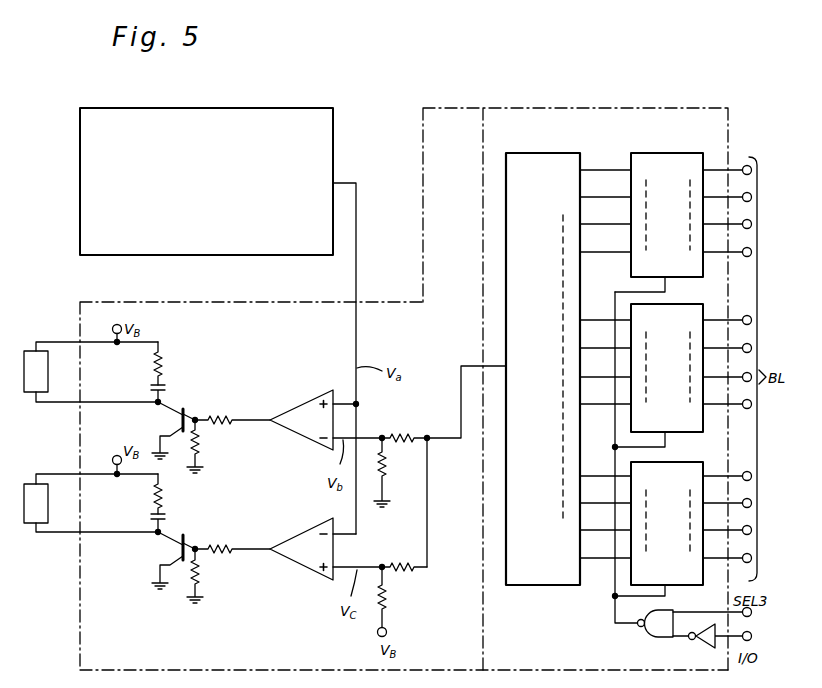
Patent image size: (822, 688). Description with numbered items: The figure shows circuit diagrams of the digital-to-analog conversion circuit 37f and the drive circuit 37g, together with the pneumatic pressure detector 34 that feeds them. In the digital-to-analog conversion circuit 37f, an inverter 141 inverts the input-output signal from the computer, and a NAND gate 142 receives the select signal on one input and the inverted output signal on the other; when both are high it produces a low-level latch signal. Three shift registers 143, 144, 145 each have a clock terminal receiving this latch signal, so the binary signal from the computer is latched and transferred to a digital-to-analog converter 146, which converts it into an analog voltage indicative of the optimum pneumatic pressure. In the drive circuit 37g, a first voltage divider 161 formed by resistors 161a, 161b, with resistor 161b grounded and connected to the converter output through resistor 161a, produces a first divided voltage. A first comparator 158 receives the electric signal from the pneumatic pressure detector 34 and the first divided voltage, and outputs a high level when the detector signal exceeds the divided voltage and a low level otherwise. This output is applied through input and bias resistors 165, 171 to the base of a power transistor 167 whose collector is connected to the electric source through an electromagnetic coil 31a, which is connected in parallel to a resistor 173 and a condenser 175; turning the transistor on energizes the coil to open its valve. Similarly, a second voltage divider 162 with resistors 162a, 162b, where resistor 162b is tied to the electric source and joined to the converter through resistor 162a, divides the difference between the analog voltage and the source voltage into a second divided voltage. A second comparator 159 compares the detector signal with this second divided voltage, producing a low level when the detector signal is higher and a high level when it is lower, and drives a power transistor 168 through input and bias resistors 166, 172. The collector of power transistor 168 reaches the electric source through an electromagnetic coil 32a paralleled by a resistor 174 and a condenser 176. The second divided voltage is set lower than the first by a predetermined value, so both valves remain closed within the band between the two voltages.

The pneumatic pressure detector 34 is at (232, 108).
The digital-to-analog conversion circuit 37f is at (610, 108).
The drive circuit 37g is at (233, 302).
The electromagnetic coil 31a is at (32, 394).
The electromagnetic coil 32a is at (32, 525).
The inverter 141 is at (700, 650).
The NAND gate 142 is at (637, 630).
The shift register 143 is at (665, 153).
The shift register 144 is at (665, 304).
The shift register 145 is at (665, 463).
The digital-to-analog converter 146 is at (545, 290).
The first comparator 158 is at (293, 432).
The second comparator 159 is at (302, 533).
The first voltage divider 161 is at (422, 443).
The resistor 161a is at (402, 433).
The resistor 161b is at (389, 470).
The second voltage divider 162 is at (411, 584).
The resistor 162a is at (408, 559).
The resistor 162b is at (389, 600).
The input resistor 165 is at (223, 405).
The input resistor 166 is at (227, 543).
The power transistor 167 is at (182, 408).
The power transistor 168 is at (176, 546).
The bias resistor 171 is at (200, 441).
The bias resistor 172 is at (203, 578).
The resistor 173 is at (161, 360).
The resistor 174 is at (163, 492).
The condenser 175 is at (150, 389).
The condenser 176 is at (151, 517).